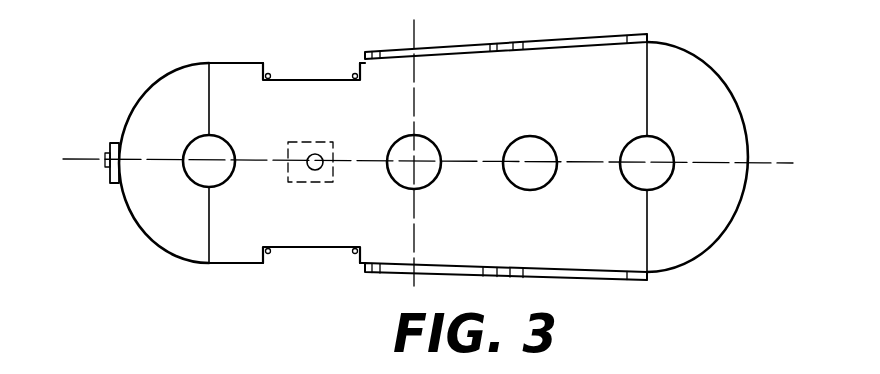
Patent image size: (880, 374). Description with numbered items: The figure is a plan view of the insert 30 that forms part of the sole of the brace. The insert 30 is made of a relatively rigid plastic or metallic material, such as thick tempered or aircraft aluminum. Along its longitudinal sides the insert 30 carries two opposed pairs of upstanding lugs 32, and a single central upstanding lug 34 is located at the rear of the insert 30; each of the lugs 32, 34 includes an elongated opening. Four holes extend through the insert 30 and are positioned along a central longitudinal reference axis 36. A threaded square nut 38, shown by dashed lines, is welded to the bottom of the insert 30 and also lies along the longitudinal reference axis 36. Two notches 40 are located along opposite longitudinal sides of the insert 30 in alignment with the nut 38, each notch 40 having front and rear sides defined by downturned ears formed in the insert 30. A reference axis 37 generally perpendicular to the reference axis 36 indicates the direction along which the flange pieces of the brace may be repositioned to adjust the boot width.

The insert 30 is at (722, 88).
The upstanding lugs 32 is at (541, 42).
The central upstanding lug 34 is at (110, 148).
The central longitudinal reference axis 36 is at (785, 158).
The reference axis 37 is at (414, 30).
The threaded square nut 38 is at (290, 185).
The notches 40 is at (305, 78).